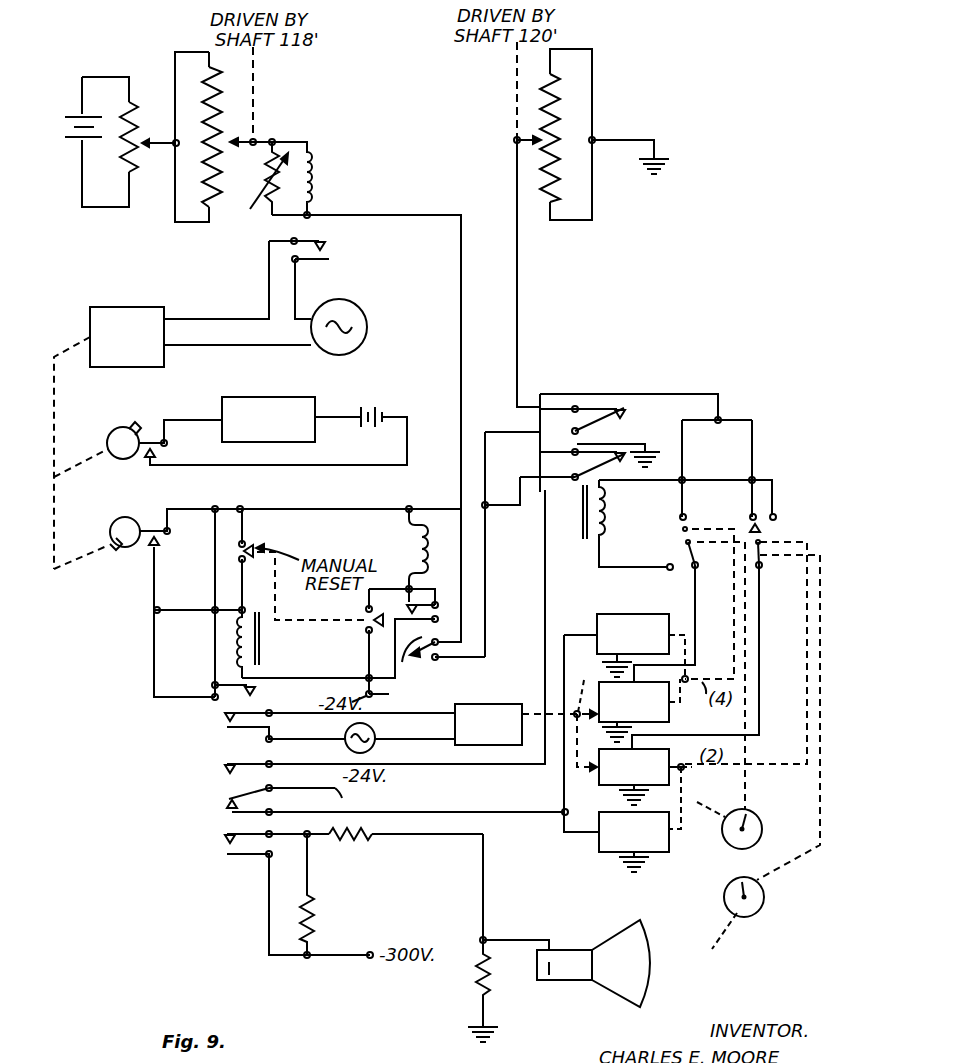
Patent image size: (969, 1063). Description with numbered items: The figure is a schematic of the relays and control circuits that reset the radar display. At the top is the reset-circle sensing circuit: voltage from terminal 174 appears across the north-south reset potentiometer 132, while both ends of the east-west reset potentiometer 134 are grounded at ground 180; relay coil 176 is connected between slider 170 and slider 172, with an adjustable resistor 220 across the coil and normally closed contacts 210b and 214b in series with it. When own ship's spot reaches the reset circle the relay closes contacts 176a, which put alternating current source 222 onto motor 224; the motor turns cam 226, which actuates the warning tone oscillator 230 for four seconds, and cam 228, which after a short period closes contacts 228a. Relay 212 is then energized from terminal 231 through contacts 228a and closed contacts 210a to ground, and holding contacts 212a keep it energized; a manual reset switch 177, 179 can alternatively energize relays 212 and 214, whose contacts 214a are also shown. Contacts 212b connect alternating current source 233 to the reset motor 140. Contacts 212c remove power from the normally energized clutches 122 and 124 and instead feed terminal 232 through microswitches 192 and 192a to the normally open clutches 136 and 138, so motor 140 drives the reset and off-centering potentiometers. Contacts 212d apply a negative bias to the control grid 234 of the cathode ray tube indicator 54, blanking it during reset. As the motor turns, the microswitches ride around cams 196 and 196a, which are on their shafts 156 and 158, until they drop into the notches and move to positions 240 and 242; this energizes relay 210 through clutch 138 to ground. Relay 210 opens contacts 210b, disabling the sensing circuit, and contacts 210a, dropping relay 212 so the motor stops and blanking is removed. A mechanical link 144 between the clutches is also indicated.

The terminal 174 is at (147, 135).
The north-south reset potentiometer 132 is at (188, 180).
The slider 170 is at (238, 144).
The adjustable resistor 220 is at (256, 185).
The relay coil 176 is at (316, 180).
The relay contacts 176a is at (322, 252).
The east-west reset potentiometer 134 is at (566, 134).
The slider 172 is at (528, 148).
The ground 180 is at (632, 135).
The motor 224 is at (150, 303).
The alternating current power source 222 is at (360, 300).
The cam 226 is at (115, 428).
The cam 228 is at (113, 518).
The contacts 228a is at (159, 535).
The warning tone oscillator 230 is at (277, 394).
The manual reset switch 177 is at (246, 535).
The relay 212 is at (258, 650).
The holding contacts 212a is at (255, 690).
The relay contacts 212b is at (225, 714).
The relay contacts 212c is at (243, 771).
The relay contacts 212d is at (225, 840).
The relay 214 is at (410, 537).
The relay contacts 214a is at (438, 601).
The normally closed relay contacts 214b is at (443, 660).
The manual reset switch 179 is at (364, 608).
The terminal 231 is at (396, 698).
The terminal 232 is at (359, 800).
The alternating current source 233 is at (373, 724).
The reset motor 140 is at (490, 701).
The relay 210 is at (580, 520).
The normally closed relay contacts 210a is at (592, 466).
The normally closed relay contacts 210b is at (590, 423).
The microswitch 192 is at (683, 541).
The microswitch 192a is at (759, 527).
The contact 242 is at (776, 512).
The contact 240 is at (665, 568).
The clutch 122 is at (608, 612).
The clutch 136 is at (667, 716).
The clutch 138 is at (598, 785).
The clutch 124 is at (601, 853).
The linkage 144 is at (584, 686).
The cam 196 is at (760, 825).
The cam 196a is at (762, 905).
The shaft 156 is at (724, 792).
The shaft 158 is at (731, 942).
The cathode ray tube indicator 54 is at (644, 935).
The control grid 234 is at (547, 973).